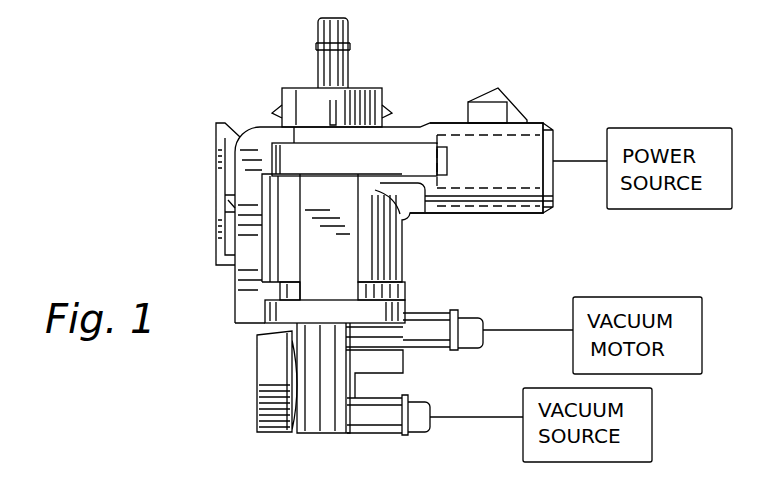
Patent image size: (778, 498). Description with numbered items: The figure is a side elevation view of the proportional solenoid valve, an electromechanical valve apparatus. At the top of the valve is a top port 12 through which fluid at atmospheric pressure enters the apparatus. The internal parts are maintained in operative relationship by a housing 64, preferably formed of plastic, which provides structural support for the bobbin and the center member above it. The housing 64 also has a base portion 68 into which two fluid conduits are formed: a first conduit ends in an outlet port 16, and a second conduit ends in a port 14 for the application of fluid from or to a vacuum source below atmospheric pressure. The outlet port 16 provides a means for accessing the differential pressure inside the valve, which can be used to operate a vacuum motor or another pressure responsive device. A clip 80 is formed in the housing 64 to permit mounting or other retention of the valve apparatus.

The top port 12 is at (340, 68).
The port 14 is at (415, 433).
The outlet port 16 is at (472, 320).
The housing 64 is at (405, 137).
The base portion 68 is at (307, 425).
The clip 80 is at (218, 177).